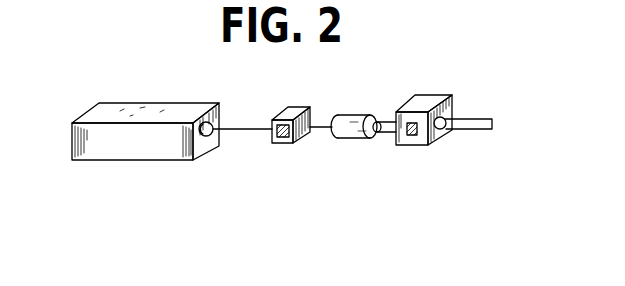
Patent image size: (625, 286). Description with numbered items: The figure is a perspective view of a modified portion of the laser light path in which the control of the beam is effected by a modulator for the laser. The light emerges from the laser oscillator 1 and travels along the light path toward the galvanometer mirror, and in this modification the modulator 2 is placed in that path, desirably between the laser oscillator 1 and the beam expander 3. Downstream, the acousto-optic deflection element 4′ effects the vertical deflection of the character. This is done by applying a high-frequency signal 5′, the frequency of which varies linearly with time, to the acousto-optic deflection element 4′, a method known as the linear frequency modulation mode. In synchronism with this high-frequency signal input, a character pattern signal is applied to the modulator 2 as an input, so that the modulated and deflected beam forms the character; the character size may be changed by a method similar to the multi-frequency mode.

The laser oscillator 1 is at (155, 158).
The modulator 2 is at (302, 137).
The beam expander 3 is at (355, 120).
The acousto-optic deflection element 4′ is at (442, 138).
The high-frequency signal 5′ is at (408, 135).